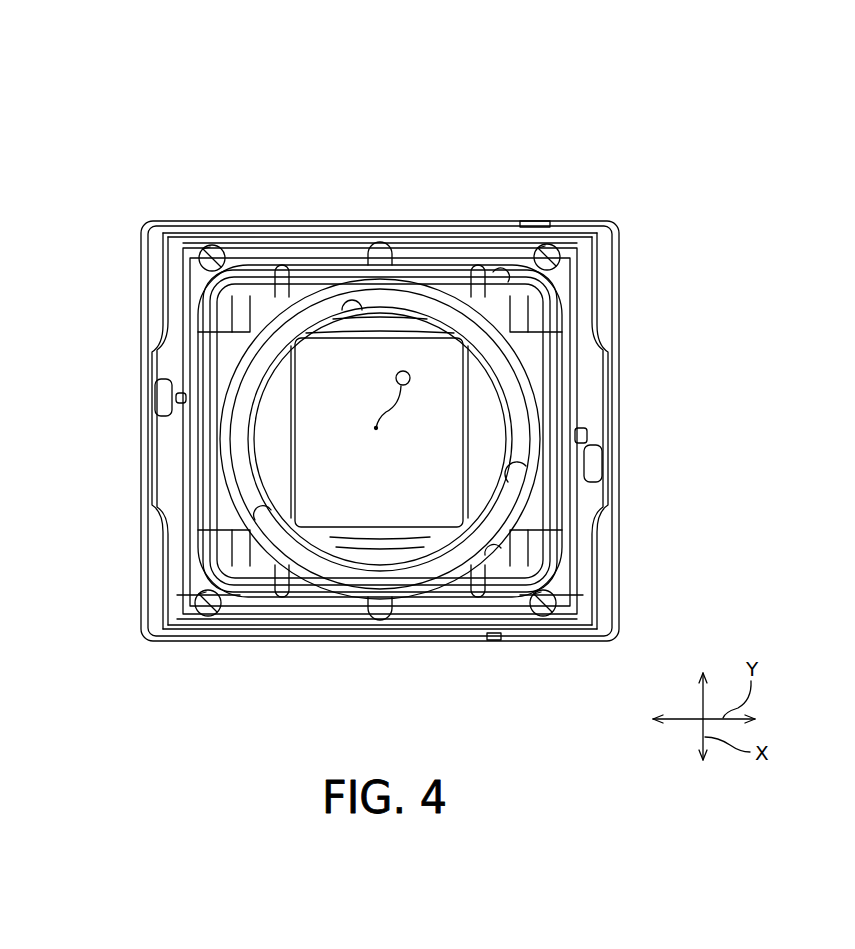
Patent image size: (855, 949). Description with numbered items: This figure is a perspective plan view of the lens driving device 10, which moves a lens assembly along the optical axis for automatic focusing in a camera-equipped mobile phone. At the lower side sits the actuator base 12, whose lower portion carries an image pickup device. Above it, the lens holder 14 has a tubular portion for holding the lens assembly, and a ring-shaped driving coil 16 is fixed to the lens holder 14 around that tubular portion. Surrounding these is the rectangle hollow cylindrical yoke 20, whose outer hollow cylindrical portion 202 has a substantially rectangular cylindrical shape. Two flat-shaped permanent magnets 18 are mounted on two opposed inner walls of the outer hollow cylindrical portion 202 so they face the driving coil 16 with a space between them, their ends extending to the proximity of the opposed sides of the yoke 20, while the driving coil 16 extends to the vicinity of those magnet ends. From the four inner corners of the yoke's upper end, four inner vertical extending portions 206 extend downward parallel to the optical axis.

The lens driving device 10 is at (484, 152).
The actuator base 12 is at (318, 312).
The lens holder 14 is at (404, 607).
The driving coil 16 is at (567, 371).
The flat-shaped permanent magnets 18 is at (345, 243).
The yoke 20 is at (612, 388).
The outer hollow cylindrical portion 202 is at (525, 222).
The inner vertical extending portions 206 is at (240, 280).